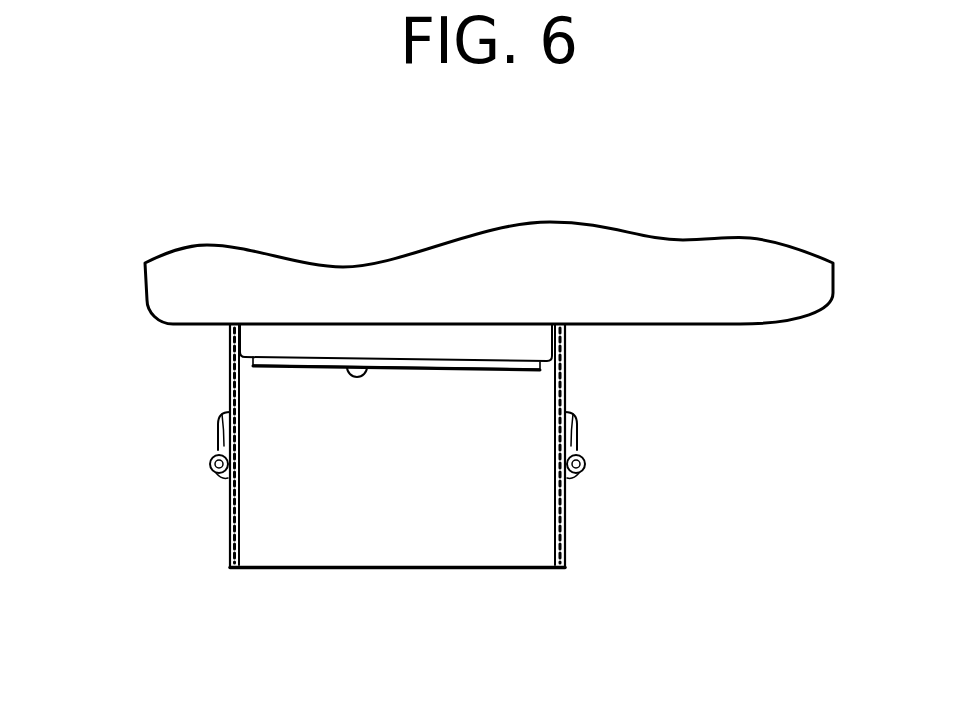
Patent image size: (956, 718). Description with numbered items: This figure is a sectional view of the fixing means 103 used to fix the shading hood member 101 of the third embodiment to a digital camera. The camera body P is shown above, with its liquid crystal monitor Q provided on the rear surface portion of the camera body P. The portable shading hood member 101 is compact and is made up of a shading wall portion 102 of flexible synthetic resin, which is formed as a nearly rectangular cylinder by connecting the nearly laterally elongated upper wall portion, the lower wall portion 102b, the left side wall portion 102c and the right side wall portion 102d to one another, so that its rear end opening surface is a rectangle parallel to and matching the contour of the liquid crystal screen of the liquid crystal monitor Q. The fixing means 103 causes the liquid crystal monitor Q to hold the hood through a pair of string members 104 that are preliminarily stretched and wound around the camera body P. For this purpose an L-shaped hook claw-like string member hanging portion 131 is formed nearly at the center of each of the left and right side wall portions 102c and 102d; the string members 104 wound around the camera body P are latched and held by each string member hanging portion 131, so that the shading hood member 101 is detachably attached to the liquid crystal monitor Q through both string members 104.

The shading hood member 101 is at (410, 587).
The shading wall portion 102 is at (318, 572).
The lower wall portion 102b is at (443, 512).
The left side wall portion 102c is at (230, 524).
The right side wall portion 102d is at (565, 530).
The fixing means 103 is at (198, 468).
The string member 104 is at (218, 448).
The string member hanging portion 131 is at (212, 468).
The camera body P is at (716, 250).
The liquid crystal monitor Q is at (365, 362).